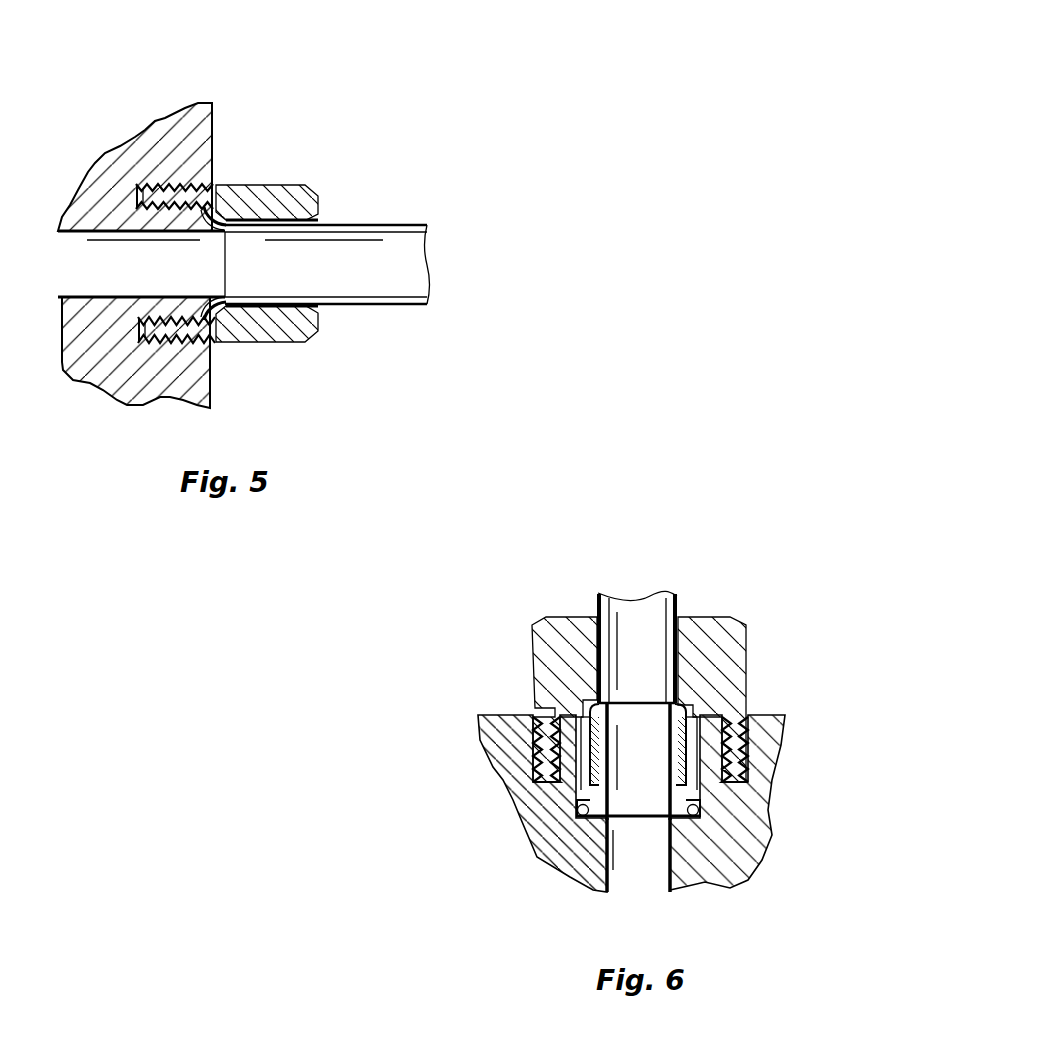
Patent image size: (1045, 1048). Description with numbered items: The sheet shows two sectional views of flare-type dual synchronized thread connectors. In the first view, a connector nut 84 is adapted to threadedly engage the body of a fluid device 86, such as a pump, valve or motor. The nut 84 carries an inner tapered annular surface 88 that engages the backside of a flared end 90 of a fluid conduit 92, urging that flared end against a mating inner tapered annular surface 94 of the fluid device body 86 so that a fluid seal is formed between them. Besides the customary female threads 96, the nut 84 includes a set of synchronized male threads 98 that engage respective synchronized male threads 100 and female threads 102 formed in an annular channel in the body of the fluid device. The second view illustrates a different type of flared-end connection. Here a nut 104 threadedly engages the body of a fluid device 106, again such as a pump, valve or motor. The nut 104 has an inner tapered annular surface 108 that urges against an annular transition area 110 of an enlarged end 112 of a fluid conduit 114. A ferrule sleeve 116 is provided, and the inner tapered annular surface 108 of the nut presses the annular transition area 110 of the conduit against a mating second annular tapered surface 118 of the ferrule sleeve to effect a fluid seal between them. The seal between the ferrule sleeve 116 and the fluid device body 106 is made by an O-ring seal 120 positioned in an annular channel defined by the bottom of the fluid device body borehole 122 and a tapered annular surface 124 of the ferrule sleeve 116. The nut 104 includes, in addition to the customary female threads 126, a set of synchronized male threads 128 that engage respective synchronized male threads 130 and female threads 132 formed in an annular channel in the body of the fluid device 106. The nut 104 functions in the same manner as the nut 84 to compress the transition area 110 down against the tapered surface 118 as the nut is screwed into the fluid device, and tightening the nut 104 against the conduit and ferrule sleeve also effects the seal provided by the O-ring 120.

In FIG. 5, the connector nut 84 is at (303, 200).
In FIG. 5, the fluid device body 86 is at (153, 142).
In FIG. 5, the inner tapered annular surface 88 is at (207, 215).
In FIG. 5, the flared end 90 is at (232, 322).
In FIG. 5, the fluid conduit 92 is at (385, 307).
In FIG. 5, the mating inner tapered annular surface 94 is at (220, 340).
In FIG. 5, the female threads 96 is at (156, 208).
In FIG. 5, the synchronized male threads 98 is at (183, 170).
In FIG. 5, the synchronized male threads 100 is at (160, 355).
In FIG. 5, the female threads 102 is at (178, 346).
In FIG. 6, the nut 104 is at (730, 632).
In FIG. 6, the fluid device body 106 is at (712, 868).
In FIG. 6, the inner tapered annular surface 108 is at (578, 788).
In FIG. 6, the annular transition area 110 is at (680, 710).
In FIG. 6, the enlarged end 112 is at (591, 790).
In FIG. 6, the fluid conduit 114 is at (677, 603).
In FIG. 6, the ferrule sleeve 116 is at (578, 808).
In FIG. 6, the second annular tapered surface 118 is at (597, 694).
In FIG. 6, the O-ring seal 120 is at (733, 862).
In FIG. 6, the fluid device body borehole 122 is at (700, 812).
In FIG. 6, the tapered annular surface 124 is at (568, 858).
In FIG. 6, the female threads 126 is at (750, 768).
In FIG. 6, the synchronized male threads 128 is at (750, 745).
In FIG. 6, the synchronized male threads 130 is at (540, 745).
In FIG. 6, the female threads 132 is at (538, 762).